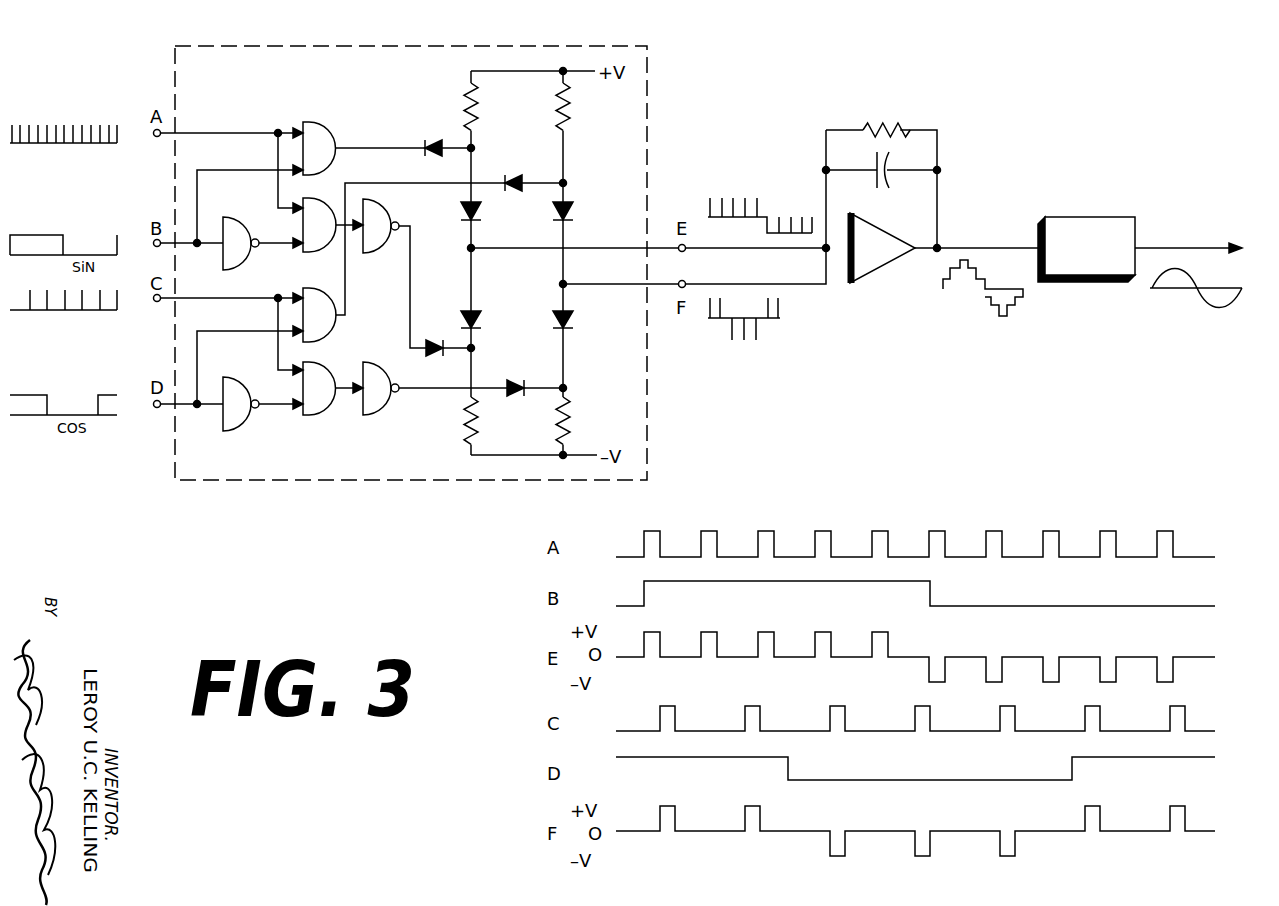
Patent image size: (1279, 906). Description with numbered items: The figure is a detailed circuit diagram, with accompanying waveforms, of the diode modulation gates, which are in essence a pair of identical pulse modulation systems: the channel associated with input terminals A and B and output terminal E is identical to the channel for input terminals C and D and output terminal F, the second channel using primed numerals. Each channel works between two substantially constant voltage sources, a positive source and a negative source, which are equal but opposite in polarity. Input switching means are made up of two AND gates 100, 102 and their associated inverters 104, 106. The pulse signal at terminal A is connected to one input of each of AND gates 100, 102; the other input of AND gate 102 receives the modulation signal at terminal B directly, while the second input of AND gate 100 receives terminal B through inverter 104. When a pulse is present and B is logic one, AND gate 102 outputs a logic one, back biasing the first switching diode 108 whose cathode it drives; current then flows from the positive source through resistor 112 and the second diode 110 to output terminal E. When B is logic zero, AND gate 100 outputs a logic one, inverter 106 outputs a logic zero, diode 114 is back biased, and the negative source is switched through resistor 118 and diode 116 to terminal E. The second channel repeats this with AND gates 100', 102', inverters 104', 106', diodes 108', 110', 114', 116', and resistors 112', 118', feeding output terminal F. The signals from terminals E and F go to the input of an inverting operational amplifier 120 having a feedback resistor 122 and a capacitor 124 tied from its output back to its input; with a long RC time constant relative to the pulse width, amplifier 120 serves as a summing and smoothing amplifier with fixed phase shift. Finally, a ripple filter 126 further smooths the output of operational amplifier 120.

The AND gate 100 is at (296, 225).
The AND gate 100' is at (324, 410).
The AND gate 102 is at (325, 135).
The AND gate 102' is at (294, 302).
The inverter 104 is at (242, 228).
The inverter 104' is at (254, 418).
The inverter 106 is at (399, 224).
The inverter 106' is at (374, 375).
The first switching diode 108 is at (424, 127).
The first switching diode 108' is at (515, 165).
The second diode 110 is at (496, 219).
The second diode 110' is at (591, 219).
The resistor 112 is at (496, 106).
The resistor 112' is at (591, 106).
The diode 114 is at (437, 330).
The diode 114' is at (526, 409).
The diode 116 is at (496, 323).
The diode 116' is at (590, 323).
The resistor 118 is at (445, 420).
The resistor 118' is at (596, 420).
The operational amplifier 120 is at (872, 272).
The feedback resistor 122 is at (868, 124).
The capacitor 124 is at (887, 186).
The ripple filter 126 is at (1078, 216).